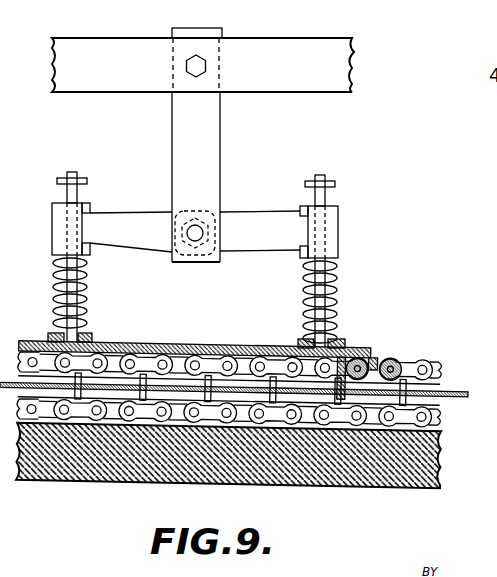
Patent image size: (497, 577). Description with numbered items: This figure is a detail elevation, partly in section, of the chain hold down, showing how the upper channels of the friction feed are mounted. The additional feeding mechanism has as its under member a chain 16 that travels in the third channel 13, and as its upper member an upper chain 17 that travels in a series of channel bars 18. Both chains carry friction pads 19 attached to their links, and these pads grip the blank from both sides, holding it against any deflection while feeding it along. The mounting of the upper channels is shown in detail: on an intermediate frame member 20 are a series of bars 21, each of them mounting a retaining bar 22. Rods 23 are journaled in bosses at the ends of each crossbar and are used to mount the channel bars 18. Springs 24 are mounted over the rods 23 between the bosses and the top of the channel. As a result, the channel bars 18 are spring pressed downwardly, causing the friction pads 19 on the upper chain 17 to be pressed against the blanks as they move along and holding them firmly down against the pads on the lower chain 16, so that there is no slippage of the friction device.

The third channel 13 is at (446, 465).
The chain 16 is at (446, 419).
The upper chain 17 is at (432, 371).
The channel bars 18 is at (362, 347).
The friction pads 19 is at (446, 388).
The intermediate frame member 20 is at (313, 60).
The bars 21 is at (202, 160).
The retaining bar 22 is at (253, 214).
The rods 23 is at (76, 172).
The springs 24 is at (87, 292).